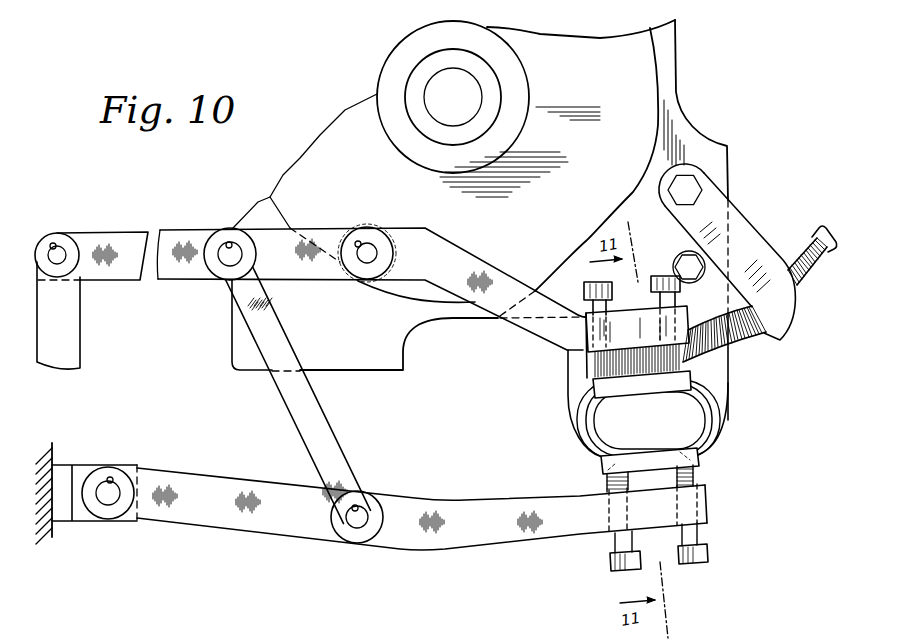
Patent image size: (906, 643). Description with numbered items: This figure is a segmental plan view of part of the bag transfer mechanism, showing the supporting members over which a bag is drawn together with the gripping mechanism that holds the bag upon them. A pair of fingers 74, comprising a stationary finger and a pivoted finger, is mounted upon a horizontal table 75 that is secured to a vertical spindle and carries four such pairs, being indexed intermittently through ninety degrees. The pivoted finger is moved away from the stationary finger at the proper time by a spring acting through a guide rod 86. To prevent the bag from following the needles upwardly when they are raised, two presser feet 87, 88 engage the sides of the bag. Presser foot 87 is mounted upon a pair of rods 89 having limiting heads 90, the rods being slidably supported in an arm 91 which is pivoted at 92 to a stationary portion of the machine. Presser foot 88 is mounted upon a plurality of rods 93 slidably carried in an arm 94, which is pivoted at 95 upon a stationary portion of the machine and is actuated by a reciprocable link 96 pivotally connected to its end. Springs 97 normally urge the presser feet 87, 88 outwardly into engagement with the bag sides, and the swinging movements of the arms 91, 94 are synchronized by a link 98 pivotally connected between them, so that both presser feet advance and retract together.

The fingers 74 is at (580, 440).
The horizontal table 75 is at (669, 58).
The guide rod 86 is at (804, 226).
The presser foot 87 is at (697, 478).
The presser foot 88 is at (690, 373).
The rods 89 is at (700, 535).
The limiting heads 90 is at (700, 563).
The arm 91 is at (455, 532).
The pivot 92 is at (110, 498).
The rods 93 is at (677, 300).
The arm 94 is at (522, 315).
The pivot 95 is at (367, 258).
The reciprocable link 96 is at (66, 335).
The springs 97 is at (700, 462).
The link 98 is at (300, 412).